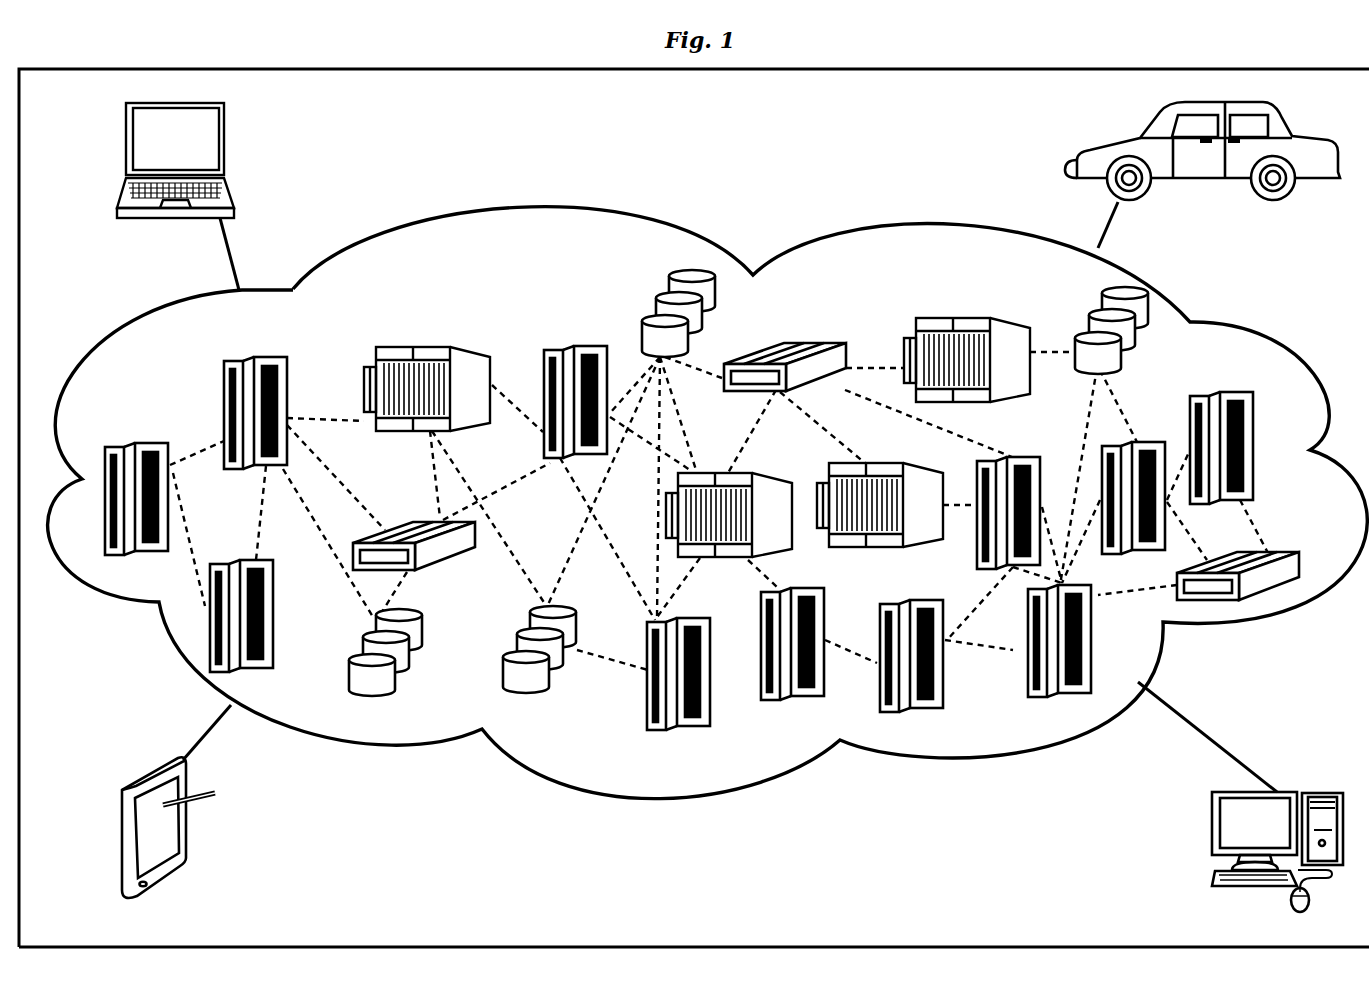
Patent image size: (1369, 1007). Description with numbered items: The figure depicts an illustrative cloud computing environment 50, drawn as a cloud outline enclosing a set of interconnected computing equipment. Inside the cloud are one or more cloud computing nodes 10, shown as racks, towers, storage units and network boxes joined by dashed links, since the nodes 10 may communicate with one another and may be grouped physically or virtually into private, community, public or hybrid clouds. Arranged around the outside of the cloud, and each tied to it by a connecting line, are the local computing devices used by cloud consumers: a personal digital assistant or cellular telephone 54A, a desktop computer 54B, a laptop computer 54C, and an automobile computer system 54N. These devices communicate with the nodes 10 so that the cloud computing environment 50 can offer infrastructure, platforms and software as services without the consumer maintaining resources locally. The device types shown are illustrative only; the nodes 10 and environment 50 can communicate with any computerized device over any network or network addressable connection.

The cloud computing nodes 10 is at (889, 258).
The cloud computing environment 50 is at (708, 503).
The personal digital assistant or cellular telephone 54A is at (176, 801).
The desktop computer 54B is at (1240, 797).
The laptop computer 54C is at (178, 196).
The automobile computer system 54N is at (1202, 175).